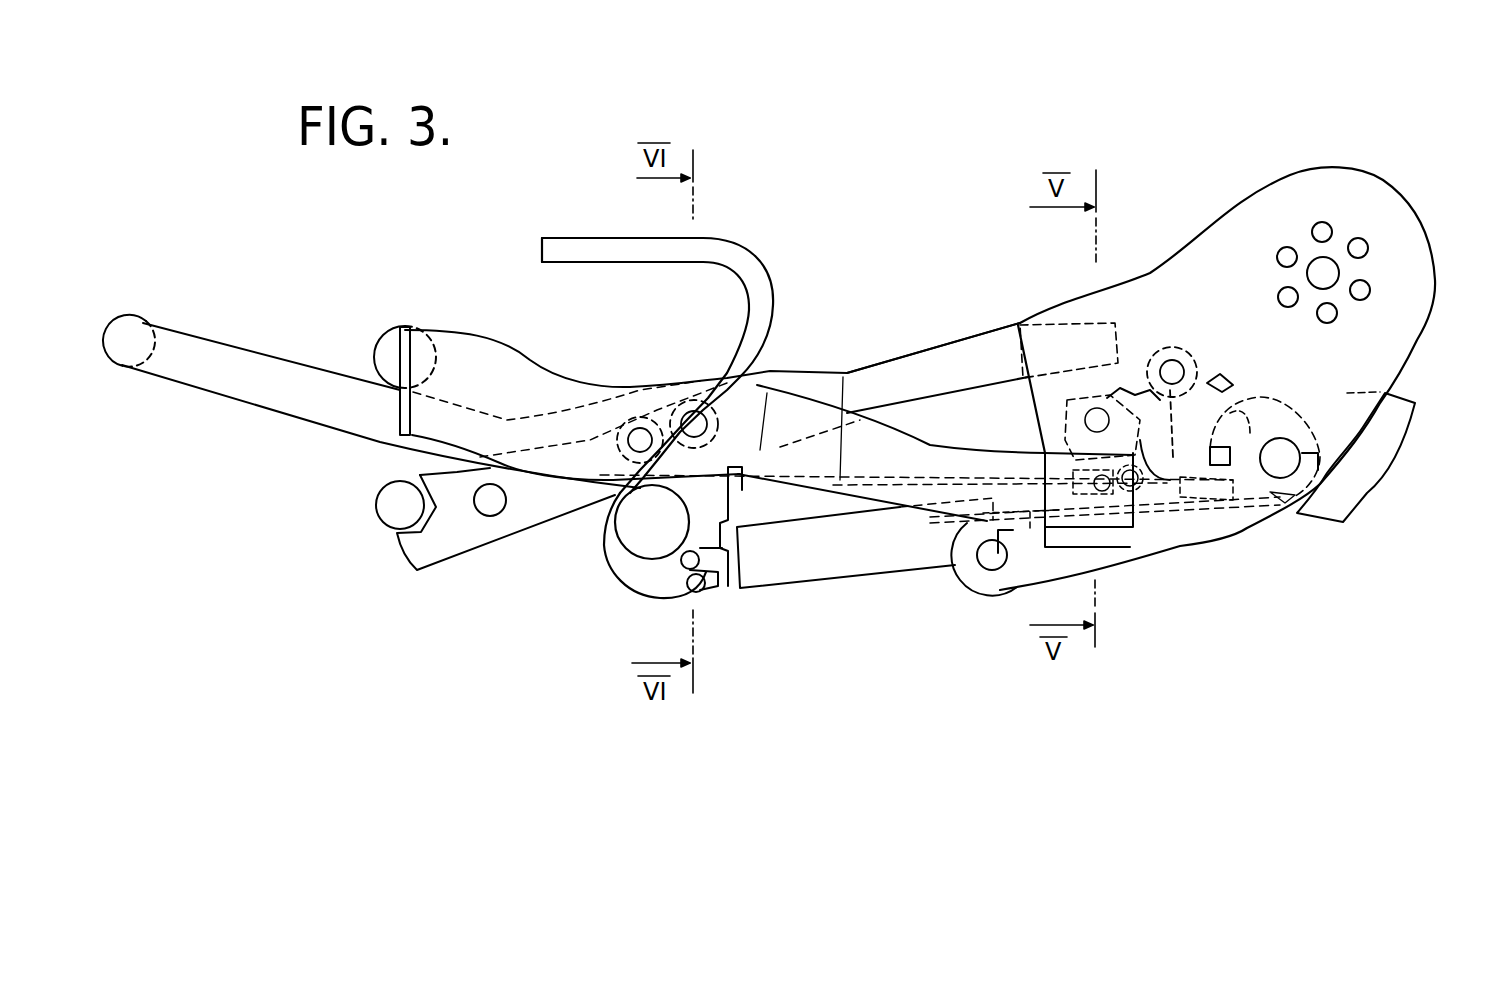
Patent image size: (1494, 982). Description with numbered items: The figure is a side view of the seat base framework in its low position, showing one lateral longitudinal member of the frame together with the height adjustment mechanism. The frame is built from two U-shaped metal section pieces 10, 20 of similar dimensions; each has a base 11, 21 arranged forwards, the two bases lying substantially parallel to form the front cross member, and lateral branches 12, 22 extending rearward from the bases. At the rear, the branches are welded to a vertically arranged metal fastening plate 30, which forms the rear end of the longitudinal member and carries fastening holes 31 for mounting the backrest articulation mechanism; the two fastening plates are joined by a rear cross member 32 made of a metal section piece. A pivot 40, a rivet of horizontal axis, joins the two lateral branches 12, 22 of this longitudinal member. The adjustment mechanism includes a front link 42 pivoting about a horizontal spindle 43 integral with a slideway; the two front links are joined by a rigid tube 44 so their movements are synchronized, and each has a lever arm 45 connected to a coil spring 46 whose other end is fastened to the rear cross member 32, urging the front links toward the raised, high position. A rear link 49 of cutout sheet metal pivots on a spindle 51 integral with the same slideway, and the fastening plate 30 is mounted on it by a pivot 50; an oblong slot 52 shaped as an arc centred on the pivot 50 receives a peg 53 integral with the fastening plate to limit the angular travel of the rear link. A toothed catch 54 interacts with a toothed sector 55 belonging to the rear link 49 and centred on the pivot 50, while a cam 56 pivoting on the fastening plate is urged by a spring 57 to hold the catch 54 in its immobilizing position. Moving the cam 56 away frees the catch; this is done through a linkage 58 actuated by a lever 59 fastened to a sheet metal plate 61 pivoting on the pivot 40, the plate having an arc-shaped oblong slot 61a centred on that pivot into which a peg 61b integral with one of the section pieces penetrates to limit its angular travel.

The metal section piece 10 is at (500, 343).
The base 11 is at (390, 352).
The lateral branch 12 is at (795, 418).
The metal section piece 20 is at (265, 352).
The base 21 is at (139, 342).
The lateral branch 22 is at (907, 378).
The fastening plate 30 is at (1298, 195).
The fastening holes 31 is at (1362, 287).
The rear cross member 32 is at (1388, 442).
The pivot 40 is at (696, 411).
The front link 42 is at (565, 500).
The horizontal spindle 43 is at (490, 502).
The rigid tube 44 is at (397, 503).
The lever arm 45 is at (687, 523).
The coil spring 46 is at (782, 562).
The rear link 49 is at (1080, 558).
The pivot 50 is at (1287, 448).
The spindle 51 is at (983, 567).
The oblong slot 52 is at (1247, 403).
The peg 53 is at (1300, 500).
The toothed catch 54 is at (1153, 380).
The toothed sector 55 is at (1258, 352).
The cam 56 is at (1083, 410).
The spring 57 is at (1200, 487).
The linkage 58 is at (875, 470).
The lever 59 is at (730, 258).
The sheet metal plate 61 is at (680, 553).
The oblong slot 61a is at (727, 383).
The peg 61b is at (640, 428).